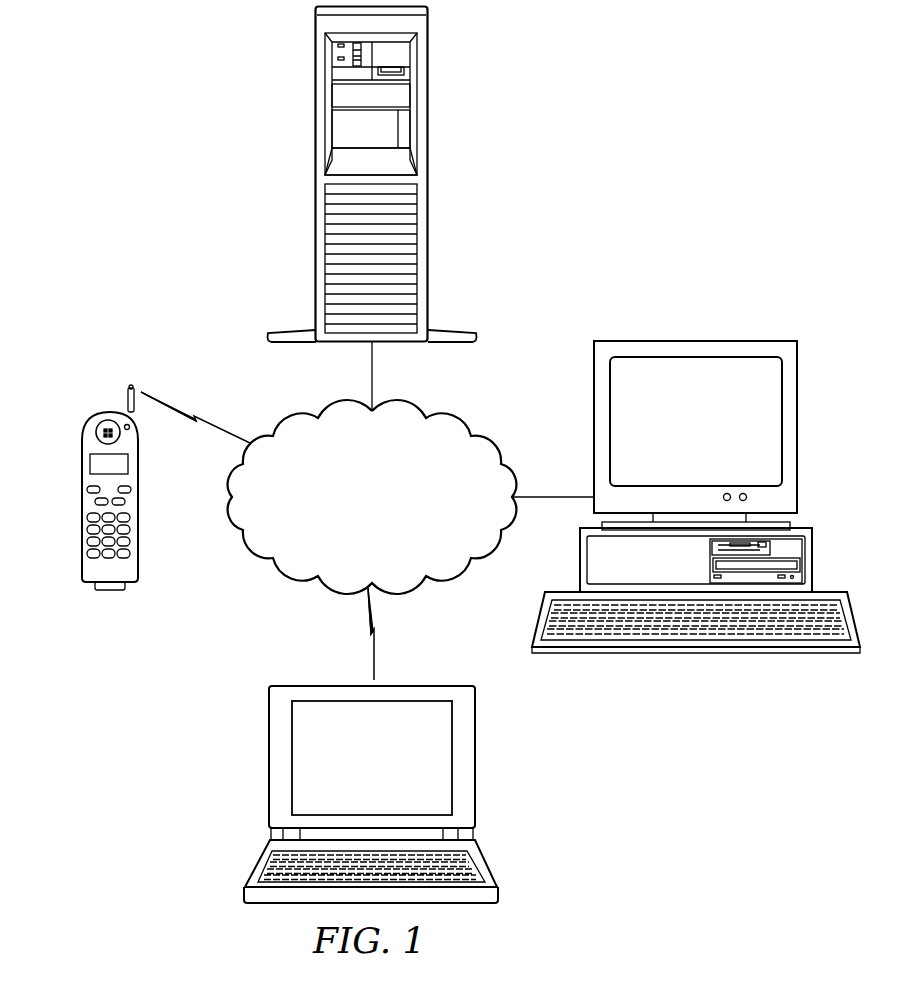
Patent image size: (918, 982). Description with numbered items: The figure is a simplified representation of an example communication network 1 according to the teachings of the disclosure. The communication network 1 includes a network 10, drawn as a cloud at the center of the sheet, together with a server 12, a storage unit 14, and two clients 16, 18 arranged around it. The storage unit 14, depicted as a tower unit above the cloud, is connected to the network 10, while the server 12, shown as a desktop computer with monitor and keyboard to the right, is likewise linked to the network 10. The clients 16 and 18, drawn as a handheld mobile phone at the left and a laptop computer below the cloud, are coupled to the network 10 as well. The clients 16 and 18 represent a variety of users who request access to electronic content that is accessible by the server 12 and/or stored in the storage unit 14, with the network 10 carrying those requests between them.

The communication network 1 is at (758, 155).
The network 10 is at (386, 510).
The server 12 is at (695, 653).
The storage unit 14 is at (316, 177).
The client 16 is at (80, 468).
The client 18 is at (268, 757).